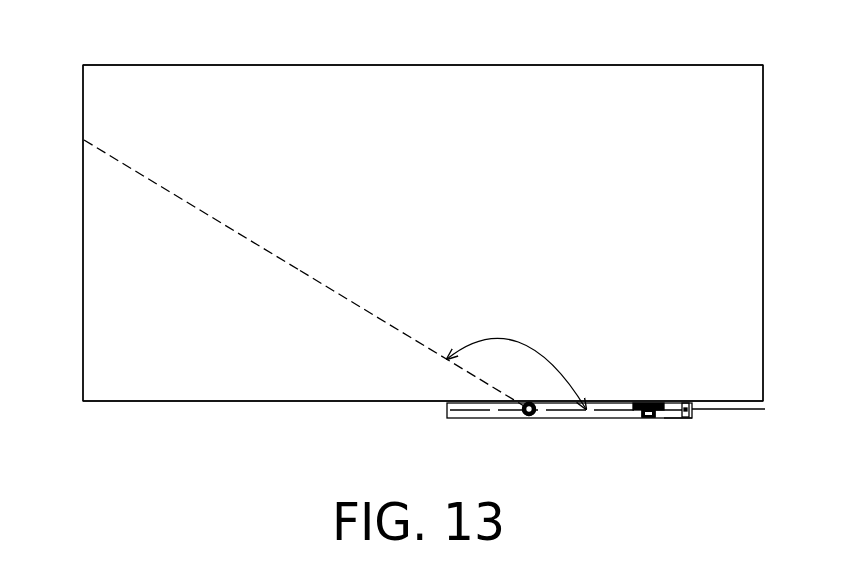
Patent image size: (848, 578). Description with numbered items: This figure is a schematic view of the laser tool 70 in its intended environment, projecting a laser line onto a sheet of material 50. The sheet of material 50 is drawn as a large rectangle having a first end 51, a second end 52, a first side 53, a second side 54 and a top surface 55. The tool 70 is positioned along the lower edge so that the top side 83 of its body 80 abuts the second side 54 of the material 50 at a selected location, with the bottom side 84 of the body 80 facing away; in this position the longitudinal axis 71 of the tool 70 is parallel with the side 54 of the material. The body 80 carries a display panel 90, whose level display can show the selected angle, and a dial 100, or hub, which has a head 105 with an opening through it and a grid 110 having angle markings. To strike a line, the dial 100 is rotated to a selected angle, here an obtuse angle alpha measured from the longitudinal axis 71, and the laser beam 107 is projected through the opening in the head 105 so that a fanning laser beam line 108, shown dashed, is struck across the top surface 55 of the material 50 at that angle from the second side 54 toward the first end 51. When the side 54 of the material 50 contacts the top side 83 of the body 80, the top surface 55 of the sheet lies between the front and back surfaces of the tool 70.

The sheet of material 50 is at (257, 65).
The first side 53 is at (338, 65).
The first end 51 is at (83, 186).
The second end 52 is at (763, 186).
The second side 54 is at (193, 402).
The top surface 55 is at (531, 173).
The laser beam 107 is at (278, 257).
The laser beam line 108 is at (340, 293).
The laser tool 70 is at (607, 428).
The dial 100 is at (522, 413).
The head 105 is at (525, 418).
The grid 110 is at (535, 418).
The display panel 90 is at (655, 403).
The body 80 is at (665, 418).
The top side 83 is at (674, 403).
The bottom side 84 is at (675, 418).
The longitudinal axis 71 is at (730, 410).